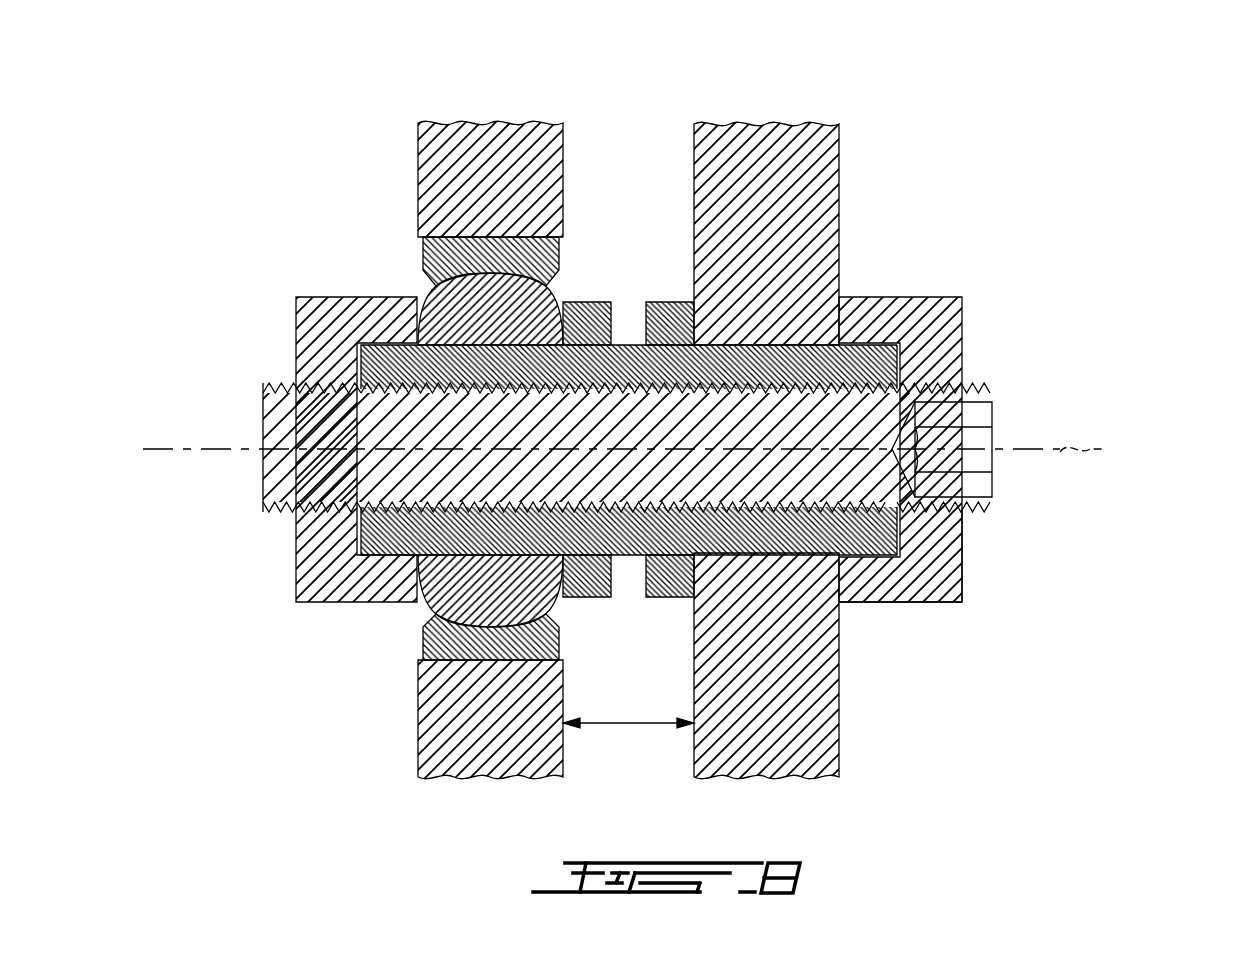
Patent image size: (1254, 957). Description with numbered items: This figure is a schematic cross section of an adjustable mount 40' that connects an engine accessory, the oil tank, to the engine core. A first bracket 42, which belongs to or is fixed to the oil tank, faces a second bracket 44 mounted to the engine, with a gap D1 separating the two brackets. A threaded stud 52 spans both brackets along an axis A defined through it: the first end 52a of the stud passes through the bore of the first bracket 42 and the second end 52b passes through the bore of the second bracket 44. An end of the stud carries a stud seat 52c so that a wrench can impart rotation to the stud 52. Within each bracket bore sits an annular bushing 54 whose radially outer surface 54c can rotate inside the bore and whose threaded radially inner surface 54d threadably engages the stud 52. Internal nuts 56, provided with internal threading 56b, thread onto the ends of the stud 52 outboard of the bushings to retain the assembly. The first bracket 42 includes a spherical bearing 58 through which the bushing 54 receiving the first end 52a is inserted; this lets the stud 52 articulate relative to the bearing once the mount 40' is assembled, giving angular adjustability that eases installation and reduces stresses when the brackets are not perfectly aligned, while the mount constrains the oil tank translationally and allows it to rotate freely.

The adjustable mount 40' is at (735, 401).
The first bracket 42 is at (465, 182).
The second bracket 44 is at (778, 185).
The threaded stud 52 is at (625, 478).
The first end 52a is at (280, 417).
The second end 52b is at (968, 482).
The stud seat 52c is at (993, 415).
The bushing 54 is at (665, 315).
The radially outer surface 54c is at (780, 345).
The threaded radially inner surface 54d is at (807, 380).
The nut 56 is at (318, 328).
The internal threading 56b is at (935, 503).
The spherical bearing 58 is at (437, 597).
The axis A is at (636, 450).
The gap distance D1 is at (628, 727).